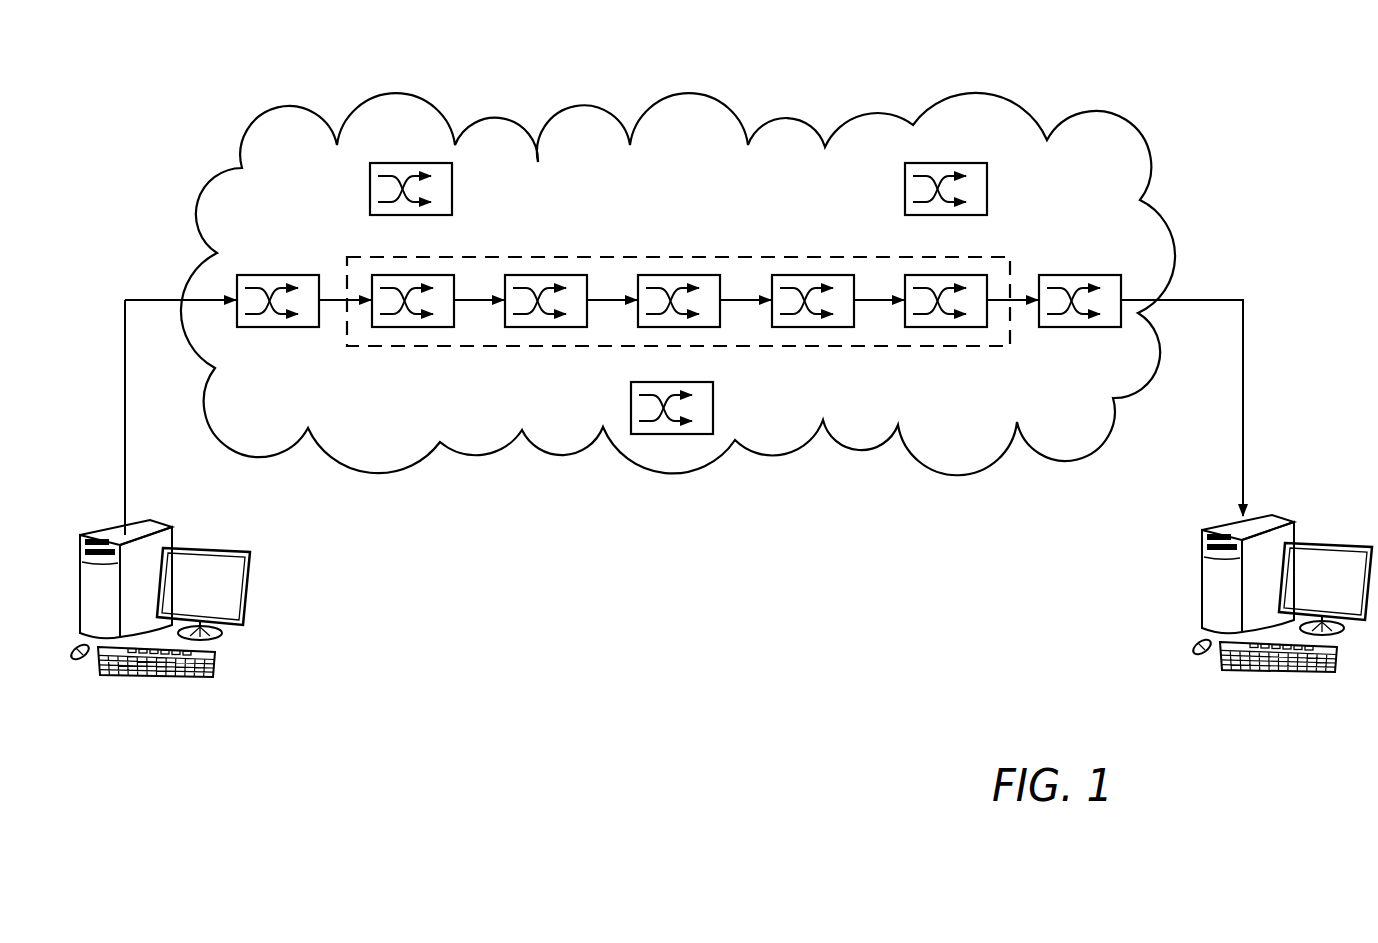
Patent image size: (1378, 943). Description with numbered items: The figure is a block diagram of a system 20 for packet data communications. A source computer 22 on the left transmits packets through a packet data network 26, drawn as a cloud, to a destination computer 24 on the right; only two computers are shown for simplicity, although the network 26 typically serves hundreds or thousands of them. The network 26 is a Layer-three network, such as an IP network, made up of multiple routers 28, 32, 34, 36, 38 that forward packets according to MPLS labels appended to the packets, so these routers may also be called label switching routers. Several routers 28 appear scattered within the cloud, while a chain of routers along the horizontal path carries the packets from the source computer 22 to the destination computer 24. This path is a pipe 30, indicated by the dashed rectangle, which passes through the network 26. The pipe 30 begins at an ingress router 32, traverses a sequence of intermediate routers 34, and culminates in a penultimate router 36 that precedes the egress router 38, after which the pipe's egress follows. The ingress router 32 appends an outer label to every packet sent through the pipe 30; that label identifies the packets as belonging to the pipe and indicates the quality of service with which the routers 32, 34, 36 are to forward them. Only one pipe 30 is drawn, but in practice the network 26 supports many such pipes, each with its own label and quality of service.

The system for packet data communications 20 is at (1218, 104).
The source computer 22 is at (230, 547).
The destination computer 24 is at (1328, 545).
The packet data network 26 is at (955, 476).
The router 28 is at (370, 181).
The pipe 30 is at (466, 347).
The ingress router 32 is at (413, 327).
The intermediate router 34 is at (551, 275).
The router 36 is at (812, 327).
The egress router 38 is at (945, 327).